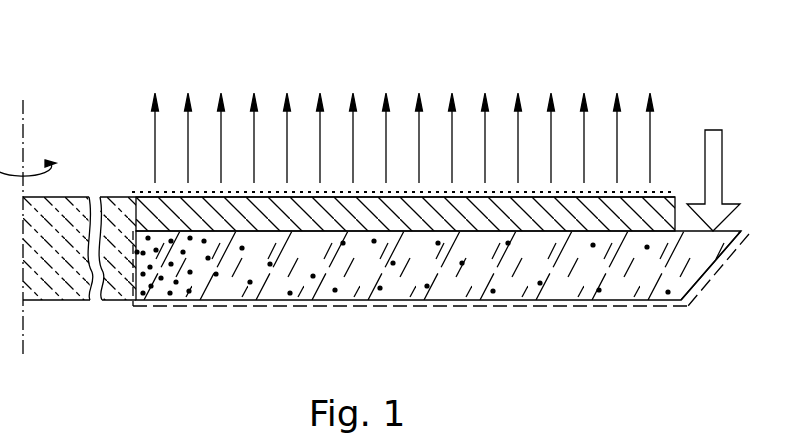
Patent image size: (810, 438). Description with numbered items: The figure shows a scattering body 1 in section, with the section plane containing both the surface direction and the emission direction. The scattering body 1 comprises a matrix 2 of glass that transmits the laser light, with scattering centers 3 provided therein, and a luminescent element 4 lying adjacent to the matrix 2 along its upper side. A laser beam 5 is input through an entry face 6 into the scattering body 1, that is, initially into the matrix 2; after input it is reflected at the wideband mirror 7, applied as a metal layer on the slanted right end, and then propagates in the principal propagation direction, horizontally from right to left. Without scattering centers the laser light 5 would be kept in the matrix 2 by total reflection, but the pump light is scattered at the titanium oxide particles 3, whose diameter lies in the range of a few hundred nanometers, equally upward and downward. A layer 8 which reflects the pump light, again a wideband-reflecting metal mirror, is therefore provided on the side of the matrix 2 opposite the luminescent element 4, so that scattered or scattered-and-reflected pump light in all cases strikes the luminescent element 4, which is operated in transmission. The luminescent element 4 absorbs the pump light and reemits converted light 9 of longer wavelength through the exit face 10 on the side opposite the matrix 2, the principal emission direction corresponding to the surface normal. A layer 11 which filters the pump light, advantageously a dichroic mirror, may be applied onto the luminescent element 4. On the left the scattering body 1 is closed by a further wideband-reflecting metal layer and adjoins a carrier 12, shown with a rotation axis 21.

The scattering body 1 is at (170, 348).
The matrix 2 is at (456, 281).
The scattering centers 3 is at (313, 278).
The luminescent element 4 is at (195, 222).
The laser beam 5 is at (715, 153).
The entry face 6 is at (727, 237).
The wideband mirror 7 is at (712, 273).
The reflecting layer 8 is at (127, 277).
The converted light 9 is at (352, 137).
The exit face 10 is at (300, 195).
The filtering layer 11 is at (505, 193).
The carrier 12 is at (38, 247).
The axis of rotation 21 is at (23, 122).